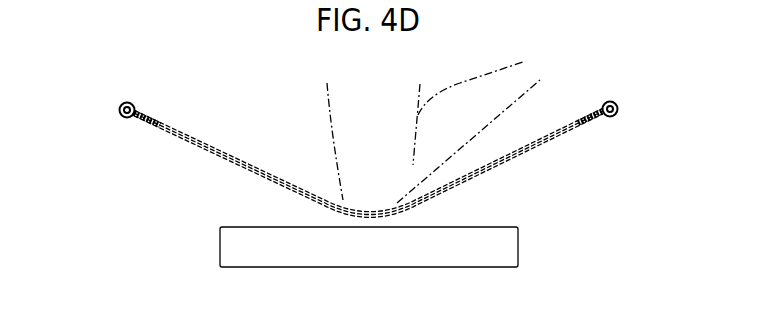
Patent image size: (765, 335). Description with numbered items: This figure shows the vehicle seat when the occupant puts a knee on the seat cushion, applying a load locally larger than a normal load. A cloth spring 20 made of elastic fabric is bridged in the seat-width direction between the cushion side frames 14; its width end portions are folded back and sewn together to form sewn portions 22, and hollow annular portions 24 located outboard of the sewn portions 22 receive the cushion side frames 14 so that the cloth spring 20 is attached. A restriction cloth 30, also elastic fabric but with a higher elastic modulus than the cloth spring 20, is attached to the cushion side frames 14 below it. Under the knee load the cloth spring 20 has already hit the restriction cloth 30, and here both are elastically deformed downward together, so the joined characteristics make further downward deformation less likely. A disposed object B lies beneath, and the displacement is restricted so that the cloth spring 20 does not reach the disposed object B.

The cushion side frame 14 is at (119, 116).
The cloth spring 20 is at (545, 127).
The sewn portion 22 is at (150, 104).
The annular portion 24 is at (122, 102).
The restriction cloth 30 is at (546, 142).
The disposed object B is at (519, 246).